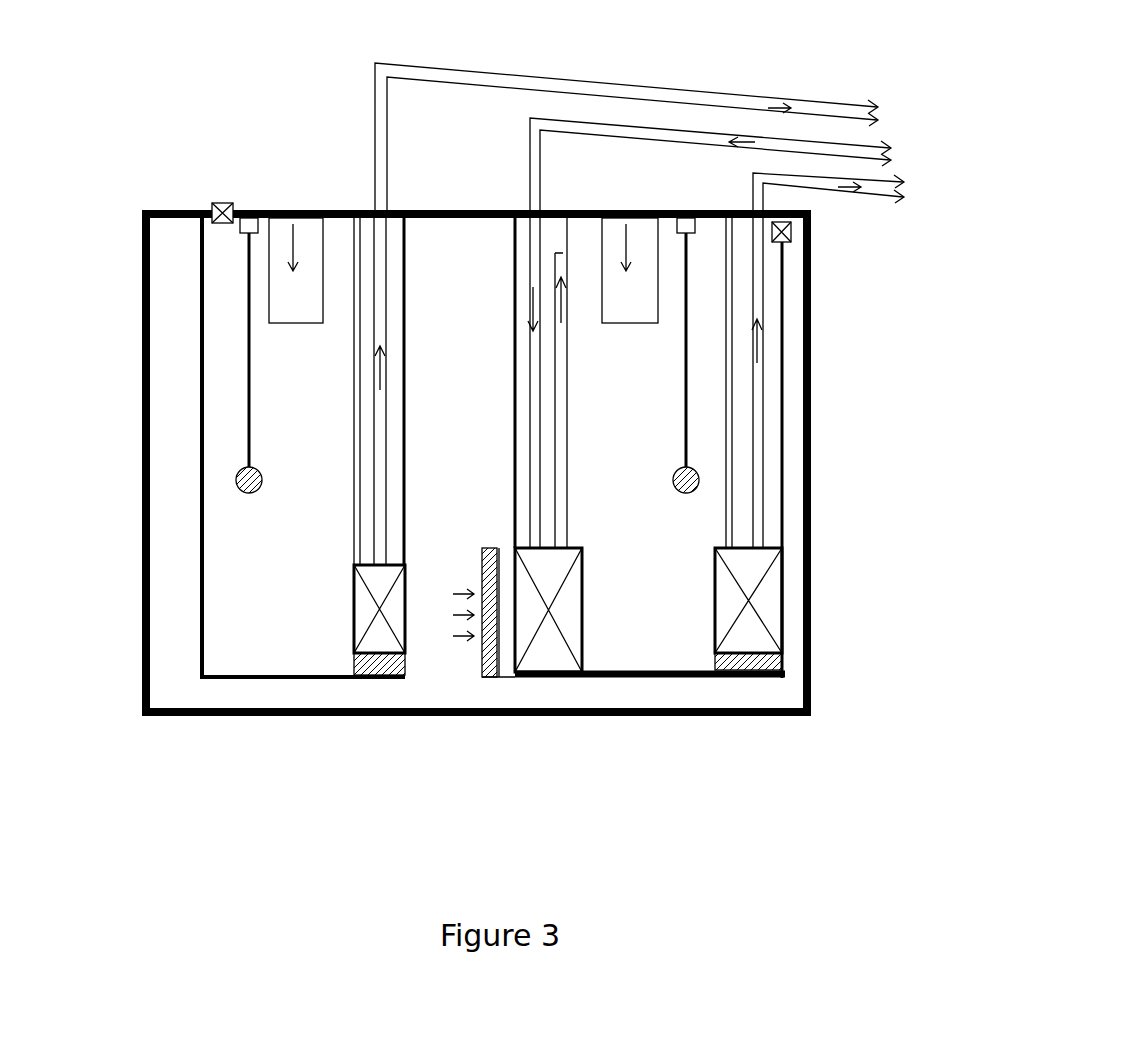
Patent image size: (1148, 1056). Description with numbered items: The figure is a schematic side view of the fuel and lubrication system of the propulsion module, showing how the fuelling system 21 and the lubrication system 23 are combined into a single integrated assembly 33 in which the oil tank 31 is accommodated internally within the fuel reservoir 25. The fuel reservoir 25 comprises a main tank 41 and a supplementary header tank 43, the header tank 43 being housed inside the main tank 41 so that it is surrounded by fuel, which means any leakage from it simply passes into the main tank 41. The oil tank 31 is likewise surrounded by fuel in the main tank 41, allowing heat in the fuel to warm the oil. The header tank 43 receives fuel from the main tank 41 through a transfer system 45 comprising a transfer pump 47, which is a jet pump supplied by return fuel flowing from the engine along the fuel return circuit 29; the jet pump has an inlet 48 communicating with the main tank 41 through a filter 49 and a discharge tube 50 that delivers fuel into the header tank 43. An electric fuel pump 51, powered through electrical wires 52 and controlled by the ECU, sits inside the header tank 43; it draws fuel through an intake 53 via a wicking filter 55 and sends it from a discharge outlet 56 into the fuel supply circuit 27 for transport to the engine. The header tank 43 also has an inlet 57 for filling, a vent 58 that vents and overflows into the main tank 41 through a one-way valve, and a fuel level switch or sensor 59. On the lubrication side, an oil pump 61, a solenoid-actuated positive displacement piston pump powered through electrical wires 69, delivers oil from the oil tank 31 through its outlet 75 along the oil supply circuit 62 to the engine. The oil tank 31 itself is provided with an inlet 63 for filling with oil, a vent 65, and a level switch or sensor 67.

The fuelling system 21 is at (783, 480).
The lubrication system 23 is at (200, 585).
The fuel reservoir 25 is at (811, 620).
The fuel supply circuit 27 is at (822, 178).
The fuel return circuit 29 is at (773, 147).
The oil tank 31 is at (252, 647).
The integrated assembly 33 is at (134, 427).
The main tank 41 is at (707, 692).
The header tank 43 is at (653, 647).
The transfer system 45 is at (498, 677).
The transfer pump 47 is at (550, 658).
The inlet 48 is at (480, 648).
The filter 49 is at (483, 663).
The discharge tube 50 is at (567, 215).
The fuel pump 51 is at (770, 625).
The electrical wires 52 is at (733, 425).
The intake 53 is at (788, 715).
The filter 55 is at (763, 680).
The discharge outlet 56 is at (762, 543).
The inlet 57 is at (643, 210).
The vent 58 is at (791, 232).
The fuel level switch or sensor 59 is at (687, 287).
The oil pump 61 is at (350, 627).
The oil supply circuit 62 is at (553, 78).
The inlet 63 is at (308, 230).
The vent 65 is at (215, 203).
The level switch or sensor 67 is at (247, 292).
The electrical wires 69 is at (354, 515).
The outlet 75 is at (380, 563).